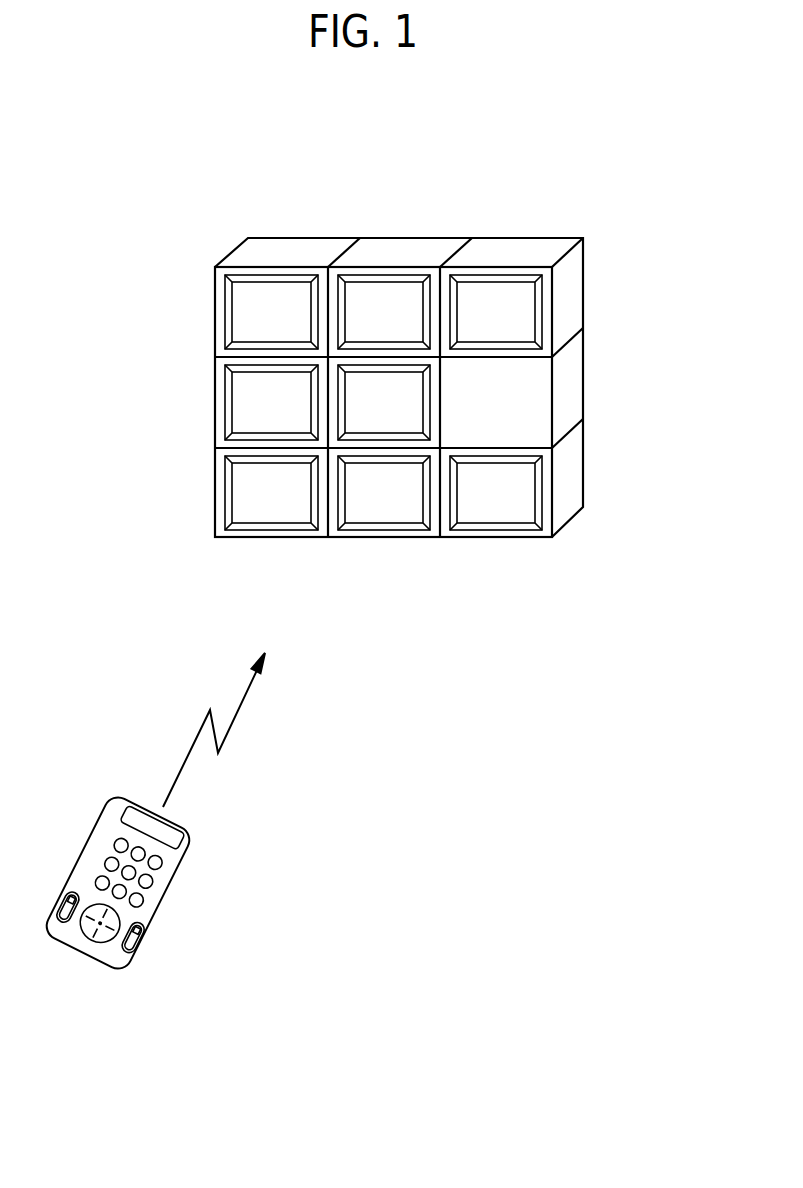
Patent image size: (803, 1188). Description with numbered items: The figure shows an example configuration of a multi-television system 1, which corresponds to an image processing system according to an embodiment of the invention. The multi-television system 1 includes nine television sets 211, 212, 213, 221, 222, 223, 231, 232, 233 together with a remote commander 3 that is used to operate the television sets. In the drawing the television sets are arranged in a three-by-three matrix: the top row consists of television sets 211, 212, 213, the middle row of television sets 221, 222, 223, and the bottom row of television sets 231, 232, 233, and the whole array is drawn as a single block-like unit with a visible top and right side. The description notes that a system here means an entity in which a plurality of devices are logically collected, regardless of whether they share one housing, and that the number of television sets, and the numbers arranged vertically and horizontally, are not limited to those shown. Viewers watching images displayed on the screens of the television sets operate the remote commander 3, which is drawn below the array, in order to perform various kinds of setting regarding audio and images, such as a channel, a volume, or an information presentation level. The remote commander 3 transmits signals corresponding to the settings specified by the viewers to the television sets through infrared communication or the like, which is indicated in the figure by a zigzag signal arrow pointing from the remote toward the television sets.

The multi-television system 1 is at (399, 742).
The television set 211 is at (298, 245).
The television set 212 is at (407, 242).
The television set 213 is at (522, 242).
The television set 221 is at (243, 401).
The television set 222 is at (400, 422).
The television set 223 is at (570, 395).
The television set 231 is at (269, 512).
The television set 232 is at (383, 512).
The television set 233 is at (495, 512).
The remote commander 3 is at (83, 955).